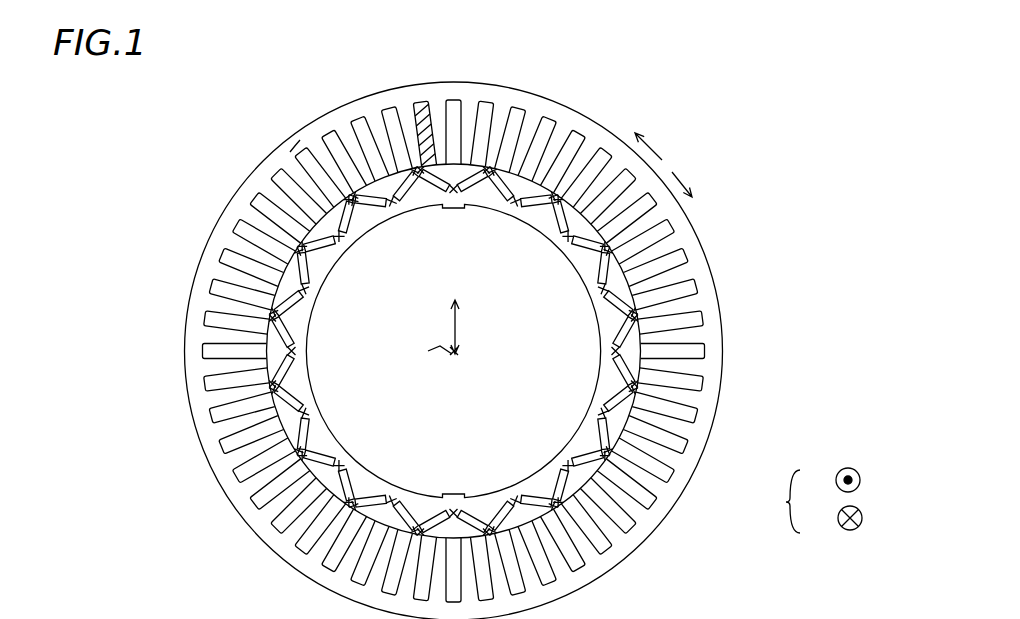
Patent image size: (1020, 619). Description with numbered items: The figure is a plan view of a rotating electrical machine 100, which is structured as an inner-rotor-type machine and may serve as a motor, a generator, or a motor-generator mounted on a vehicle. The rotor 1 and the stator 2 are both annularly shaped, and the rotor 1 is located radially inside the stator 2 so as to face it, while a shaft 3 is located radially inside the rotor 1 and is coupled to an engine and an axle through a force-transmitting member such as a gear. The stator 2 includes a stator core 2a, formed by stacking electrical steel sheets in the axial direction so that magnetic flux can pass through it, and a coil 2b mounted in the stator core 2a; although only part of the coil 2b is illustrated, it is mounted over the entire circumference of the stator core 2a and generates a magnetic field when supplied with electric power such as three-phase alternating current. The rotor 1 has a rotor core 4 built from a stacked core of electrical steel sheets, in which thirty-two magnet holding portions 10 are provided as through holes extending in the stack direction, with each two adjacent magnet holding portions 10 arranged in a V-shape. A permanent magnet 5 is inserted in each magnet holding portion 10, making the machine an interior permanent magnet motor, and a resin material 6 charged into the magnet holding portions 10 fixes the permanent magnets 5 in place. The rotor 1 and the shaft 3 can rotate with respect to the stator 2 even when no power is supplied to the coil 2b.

The rotating electrical machine 100 is at (198, 76).
The rotor 1 is at (272, 279).
The stator 2 is at (257, 165).
The stator core 2a is at (290, 147).
The coil 2b is at (425, 100).
The shaft 3 is at (560, 335).
The rotor core 4 is at (397, 351).
The permanent magnet 5 is at (410, 140).
The resin material 6 is at (385, 235).
The magnet holding portion 10 is at (373, 170).